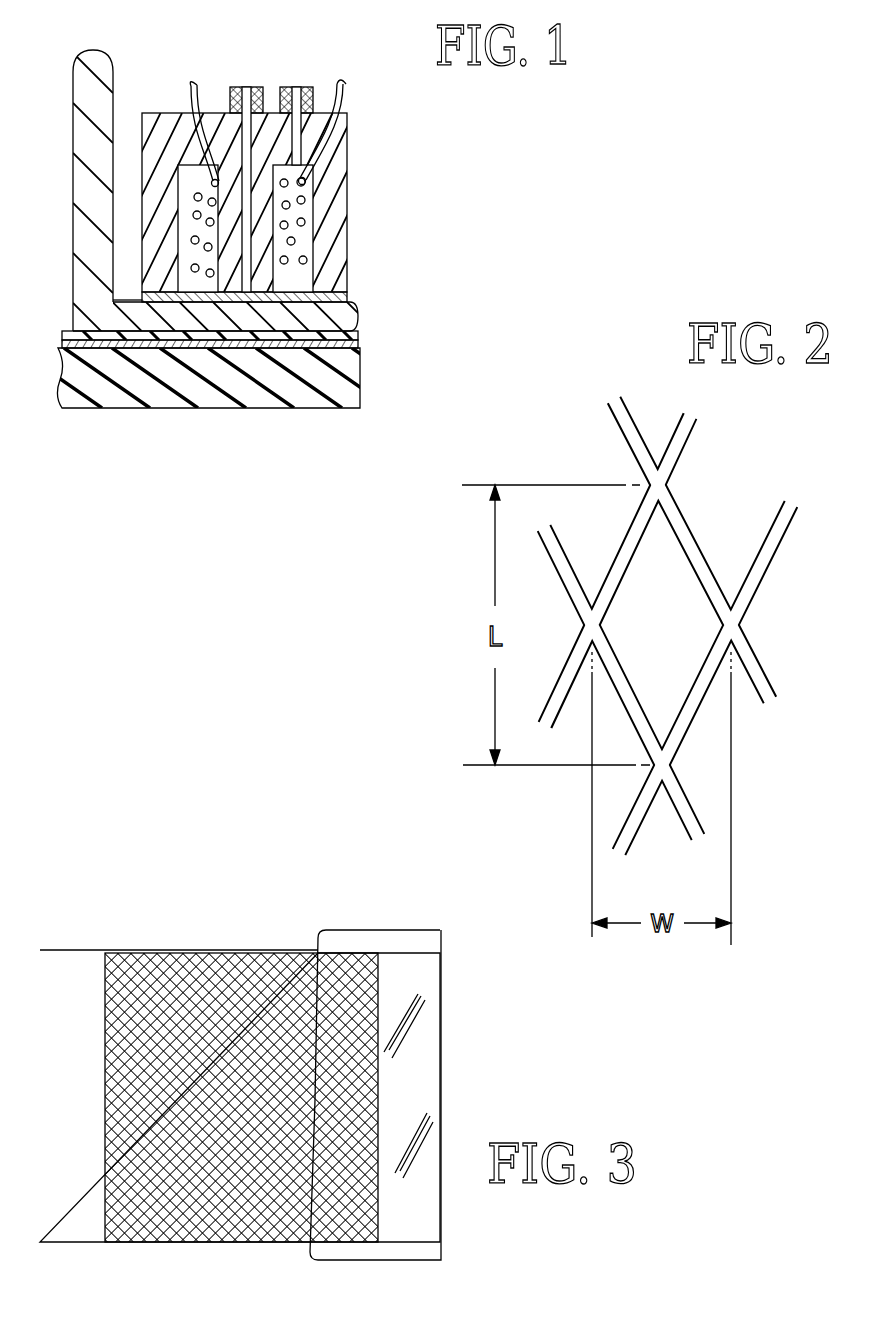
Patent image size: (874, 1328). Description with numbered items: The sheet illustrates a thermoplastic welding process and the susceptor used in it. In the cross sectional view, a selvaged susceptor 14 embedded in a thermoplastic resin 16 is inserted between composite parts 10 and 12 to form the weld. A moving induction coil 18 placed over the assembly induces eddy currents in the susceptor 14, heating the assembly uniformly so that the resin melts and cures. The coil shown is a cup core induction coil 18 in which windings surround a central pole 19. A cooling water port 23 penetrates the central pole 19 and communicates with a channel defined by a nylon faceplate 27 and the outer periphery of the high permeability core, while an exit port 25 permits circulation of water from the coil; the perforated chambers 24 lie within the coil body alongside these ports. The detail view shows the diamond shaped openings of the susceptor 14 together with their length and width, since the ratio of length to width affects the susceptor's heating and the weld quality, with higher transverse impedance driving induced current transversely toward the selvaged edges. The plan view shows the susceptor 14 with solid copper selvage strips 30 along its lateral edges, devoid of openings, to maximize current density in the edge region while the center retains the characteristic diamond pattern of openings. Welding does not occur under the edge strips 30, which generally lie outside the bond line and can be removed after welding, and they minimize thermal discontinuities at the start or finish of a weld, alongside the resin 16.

In FIG. 1, the composite part 10 is at (110, 68).
In FIG. 1, the composite part 12 is at (358, 389).
In FIG. 1, the selvaged susceptor 14 is at (360, 344).
In FIG. 2, the selvaged susceptor 14 is at (690, 443).
In FIG. 3, the selvaged susceptor 14 is at (180, 1244).
In FIG. 1, the thermoplastic resin 16 is at (74, 337).
In FIG. 3, the thermoplastic resin 16 is at (439, 1262).
In FIG. 1, the induction coil 18 is at (366, 188).
In FIG. 1, the central pole 19 is at (273, 283).
In FIG. 1, the cooling water port 23 is at (268, 87).
In FIG. 1, the perforated chamber 24 is at (313, 188).
In FIG. 1, the exit port 25 is at (316, 87).
In FIG. 1, the nylon faceplate 27 is at (140, 298).
In FIG. 3, the selvage strips 30 is at (82, 1243).